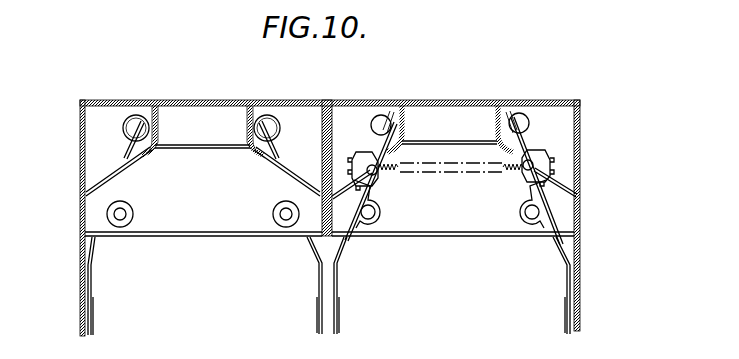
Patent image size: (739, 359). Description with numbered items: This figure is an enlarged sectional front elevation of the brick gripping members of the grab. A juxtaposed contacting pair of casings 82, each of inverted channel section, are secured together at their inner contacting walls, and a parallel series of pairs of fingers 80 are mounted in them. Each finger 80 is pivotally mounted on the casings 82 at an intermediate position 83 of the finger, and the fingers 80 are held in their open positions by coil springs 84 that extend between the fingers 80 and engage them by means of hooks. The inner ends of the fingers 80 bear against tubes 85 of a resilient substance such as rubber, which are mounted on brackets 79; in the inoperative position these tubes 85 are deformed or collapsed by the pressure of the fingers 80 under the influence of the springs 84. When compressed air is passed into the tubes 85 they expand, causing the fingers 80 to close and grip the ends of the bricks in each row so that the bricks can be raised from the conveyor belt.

The brackets 79 is at (442, 125).
The fingers 80 is at (318, 292).
The casings 82 is at (125, 100).
The intermediate positions 83 is at (532, 219).
The coil springs 84 is at (509, 170).
The tubes 85 is at (504, 122).